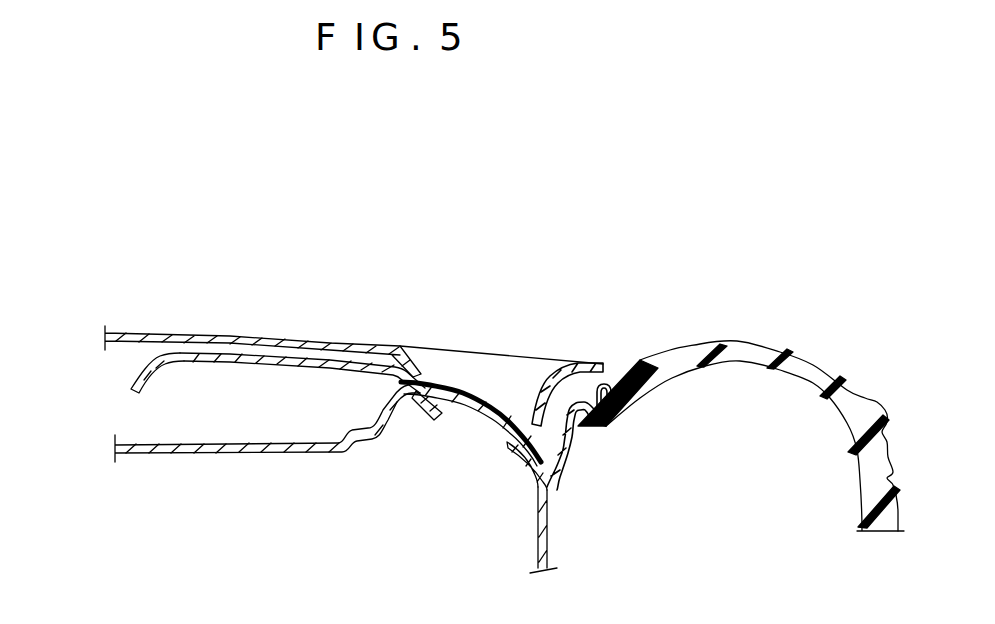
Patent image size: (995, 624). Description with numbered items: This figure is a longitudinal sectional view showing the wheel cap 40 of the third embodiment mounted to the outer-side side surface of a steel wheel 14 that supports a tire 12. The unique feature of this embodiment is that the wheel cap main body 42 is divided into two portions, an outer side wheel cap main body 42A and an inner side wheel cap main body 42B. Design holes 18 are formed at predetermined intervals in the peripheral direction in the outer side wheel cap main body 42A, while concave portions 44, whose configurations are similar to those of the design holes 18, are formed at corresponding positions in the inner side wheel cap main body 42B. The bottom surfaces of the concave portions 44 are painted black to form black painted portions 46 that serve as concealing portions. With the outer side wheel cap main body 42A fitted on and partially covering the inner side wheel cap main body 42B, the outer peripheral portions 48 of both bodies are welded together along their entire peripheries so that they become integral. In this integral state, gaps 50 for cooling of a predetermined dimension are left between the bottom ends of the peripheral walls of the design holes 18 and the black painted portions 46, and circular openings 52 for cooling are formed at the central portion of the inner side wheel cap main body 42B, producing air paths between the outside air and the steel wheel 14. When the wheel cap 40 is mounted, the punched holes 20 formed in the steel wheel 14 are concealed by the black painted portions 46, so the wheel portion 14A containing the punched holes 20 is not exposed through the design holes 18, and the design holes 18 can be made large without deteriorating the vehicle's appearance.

The tire 12 is at (743, 353).
The steel wheel 14 is at (568, 544).
The wheel portion 14A is at (457, 380).
The design holes 18 is at (507, 380).
The punched holes 20 is at (507, 443).
The wheel cap 40 is at (218, 283).
The wheel cap main body 42 is at (402, 228).
The outer side wheel cap main body 42A is at (257, 334).
The inner side wheel cap main body 42B is at (322, 360).
The concave portions 44 is at (503, 333).
The black painted portions 46 is at (466, 400).
The outer peripheral portions 48 is at (620, 357).
The gaps for cooling 50 is at (430, 378).
The circular openings for cooling 52 is at (130, 375).